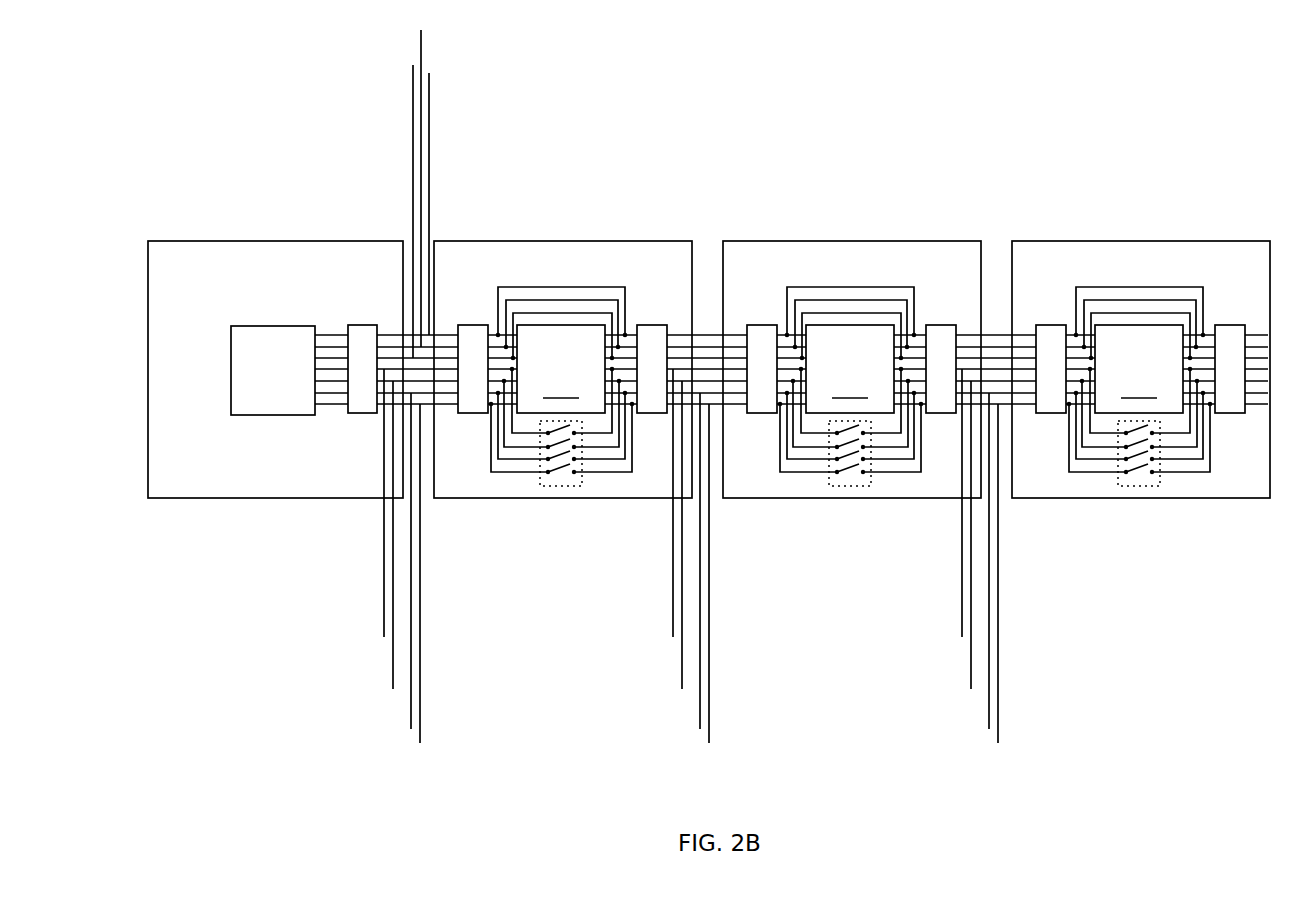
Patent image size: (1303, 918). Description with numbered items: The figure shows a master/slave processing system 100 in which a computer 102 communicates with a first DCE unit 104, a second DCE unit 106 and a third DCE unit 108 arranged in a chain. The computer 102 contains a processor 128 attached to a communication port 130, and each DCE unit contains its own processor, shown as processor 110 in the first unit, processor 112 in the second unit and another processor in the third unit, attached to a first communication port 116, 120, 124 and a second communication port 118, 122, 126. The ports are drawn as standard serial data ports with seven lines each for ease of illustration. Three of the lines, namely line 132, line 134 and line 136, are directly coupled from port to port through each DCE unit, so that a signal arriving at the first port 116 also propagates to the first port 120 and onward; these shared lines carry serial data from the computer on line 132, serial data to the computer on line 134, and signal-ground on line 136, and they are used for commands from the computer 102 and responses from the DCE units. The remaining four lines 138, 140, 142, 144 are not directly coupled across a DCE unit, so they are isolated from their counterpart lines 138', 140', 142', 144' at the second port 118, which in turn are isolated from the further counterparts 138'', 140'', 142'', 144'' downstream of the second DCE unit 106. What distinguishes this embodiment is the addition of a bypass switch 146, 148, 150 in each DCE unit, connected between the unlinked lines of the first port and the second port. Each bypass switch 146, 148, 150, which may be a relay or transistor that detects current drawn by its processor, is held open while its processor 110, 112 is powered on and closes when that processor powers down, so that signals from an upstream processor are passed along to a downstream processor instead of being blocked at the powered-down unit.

The system 100 is at (213, 708).
The computer 102 is at (275, 241).
The first DCE unit 104 is at (565, 241).
The second DCE unit 106 is at (854, 241).
The third DCE unit 108 is at (1143, 241).
The processor 110 is at (850, 369).
The processor 112 is at (850, 369).
The first communication port 116 is at (473, 325).
The second communication port 118 is at (652, 325).
The first communication port 120 is at (762, 325).
The second communication port 122 is at (941, 325).
The first communication port 124 is at (1051, 325).
The second communication port 126 is at (1230, 325).
The processor 128 is at (272, 415).
The communication port 130 is at (362, 325).
The line 132 is at (413, 65).
The line 134 is at (429, 73).
The line 136 is at (421, 30).
The line 138 is at (351, 508).
The line 140 is at (360, 540).
The line 142 is at (377, 566).
The line 144 is at (454, 579).
The counterpart line 138' is at (638, 508).
The counterpart line 140' is at (647, 540).
The counterpart line 142' is at (664, 566).
The counterpart line 144' is at (746, 579).
The counterpart line 138'' is at (923, 508).
The counterpart line 140'' is at (932, 540).
The counterpart line 142'' is at (950, 566).
The counterpart line 144'' is at (1037, 579).
The bypass switch 146 is at (561, 486).
The bypass switch 148 is at (850, 486).
The bypass switch 150 is at (1139, 486).